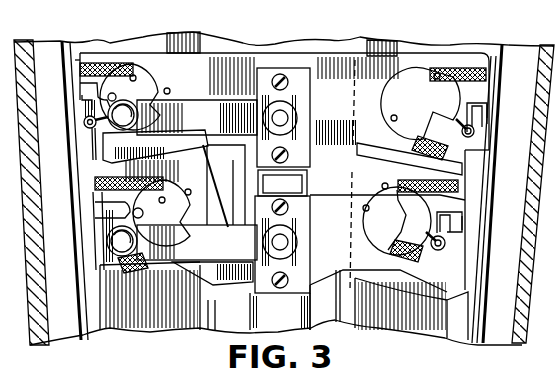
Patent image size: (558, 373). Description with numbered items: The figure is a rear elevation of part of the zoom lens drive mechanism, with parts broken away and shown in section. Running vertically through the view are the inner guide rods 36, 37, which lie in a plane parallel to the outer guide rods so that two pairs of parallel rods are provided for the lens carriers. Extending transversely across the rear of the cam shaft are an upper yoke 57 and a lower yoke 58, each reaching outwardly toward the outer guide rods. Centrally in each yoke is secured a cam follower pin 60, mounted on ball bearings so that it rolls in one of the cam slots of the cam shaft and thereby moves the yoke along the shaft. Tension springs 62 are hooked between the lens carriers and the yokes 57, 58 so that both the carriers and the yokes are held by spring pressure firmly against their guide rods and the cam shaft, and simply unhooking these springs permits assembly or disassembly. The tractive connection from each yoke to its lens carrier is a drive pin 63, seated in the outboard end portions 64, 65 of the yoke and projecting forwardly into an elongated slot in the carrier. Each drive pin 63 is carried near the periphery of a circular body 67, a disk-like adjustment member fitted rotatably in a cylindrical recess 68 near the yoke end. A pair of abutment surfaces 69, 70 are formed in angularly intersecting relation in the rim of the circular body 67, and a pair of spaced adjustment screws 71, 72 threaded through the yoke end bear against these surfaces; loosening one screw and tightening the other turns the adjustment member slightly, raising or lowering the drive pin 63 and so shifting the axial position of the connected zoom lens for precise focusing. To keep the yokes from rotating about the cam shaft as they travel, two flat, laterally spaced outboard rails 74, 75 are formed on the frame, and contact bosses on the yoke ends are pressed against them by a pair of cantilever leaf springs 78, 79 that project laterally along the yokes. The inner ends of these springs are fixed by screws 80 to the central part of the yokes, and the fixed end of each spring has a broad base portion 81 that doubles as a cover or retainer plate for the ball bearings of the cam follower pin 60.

The inner guide rod 36 is at (330, 320).
The inner guide rod 37 is at (222, 318).
The upper yoke 57 is at (356, 88).
The lower yoke 58 is at (338, 266).
The cam follower pin 60 is at (290, 118).
The tension spring 62 is at (84, 123).
The drive pin 63 is at (100, 78).
The outboard end portion of yoke 64 is at (489, 112).
The outboard end portion of yoke 65 is at (80, 55).
The circular body 67 is at (161, 96).
The cylindrical recess 68 is at (170, 90).
The abutment surface 69 is at (136, 79).
The abutment surface 70 is at (415, 138).
The adjustment screw 71 is at (104, 58).
The adjustment screw 72 is at (142, 275).
The outboard rail 74 is at (400, 325).
The outboard rail 75 is at (170, 330).
The cantilever leaf spring 78 is at (218, 126).
The cantilever leaf spring 79 is at (230, 251).
The screw 80 is at (284, 75).
The broad base portion 81 is at (266, 80).